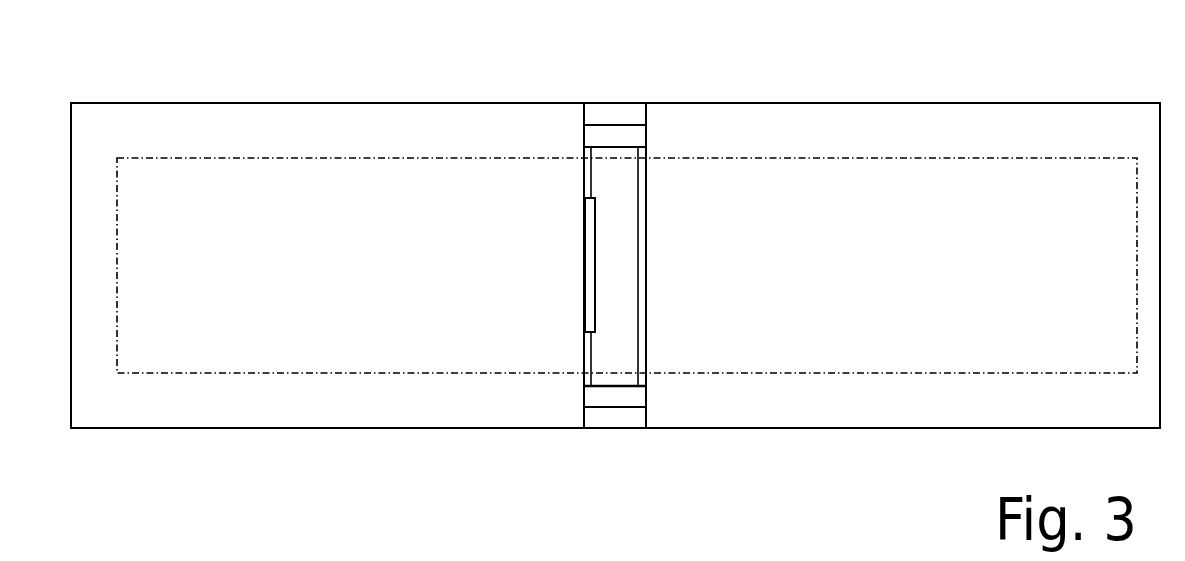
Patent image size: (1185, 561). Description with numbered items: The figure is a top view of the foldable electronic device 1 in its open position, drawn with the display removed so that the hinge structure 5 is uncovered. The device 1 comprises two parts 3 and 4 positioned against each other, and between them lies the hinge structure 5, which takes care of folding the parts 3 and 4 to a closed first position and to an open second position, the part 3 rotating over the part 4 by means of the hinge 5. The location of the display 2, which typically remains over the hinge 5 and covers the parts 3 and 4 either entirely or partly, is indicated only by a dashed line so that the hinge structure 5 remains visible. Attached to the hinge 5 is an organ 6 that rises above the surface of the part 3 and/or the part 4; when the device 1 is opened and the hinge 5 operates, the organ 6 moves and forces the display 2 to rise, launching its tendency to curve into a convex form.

The device 1 is at (615, 272).
The display 2 is at (960, 158).
The part 3 is at (911, 430).
The part 4 is at (368, 430).
The hinge structure 5 is at (561, 269).
The organ 6 is at (585, 250).